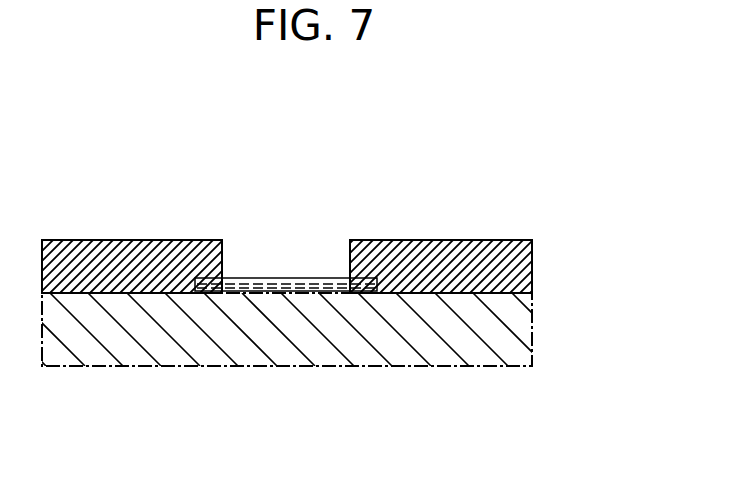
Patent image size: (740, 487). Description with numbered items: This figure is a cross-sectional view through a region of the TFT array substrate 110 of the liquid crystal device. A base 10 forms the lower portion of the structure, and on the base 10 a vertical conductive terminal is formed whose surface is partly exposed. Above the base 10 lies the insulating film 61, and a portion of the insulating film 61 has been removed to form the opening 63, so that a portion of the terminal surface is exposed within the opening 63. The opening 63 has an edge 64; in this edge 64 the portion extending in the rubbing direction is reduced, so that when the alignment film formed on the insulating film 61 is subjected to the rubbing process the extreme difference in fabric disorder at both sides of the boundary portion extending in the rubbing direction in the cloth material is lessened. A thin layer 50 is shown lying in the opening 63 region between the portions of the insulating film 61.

The base 10 is at (517, 330).
The liquid crystal layer 50 is at (360, 292).
The insulating film 61 is at (428, 240).
The opening 63 is at (230, 249).
The edge 64 is at (350, 239).
The TFT array substrate 110 is at (540, 202).